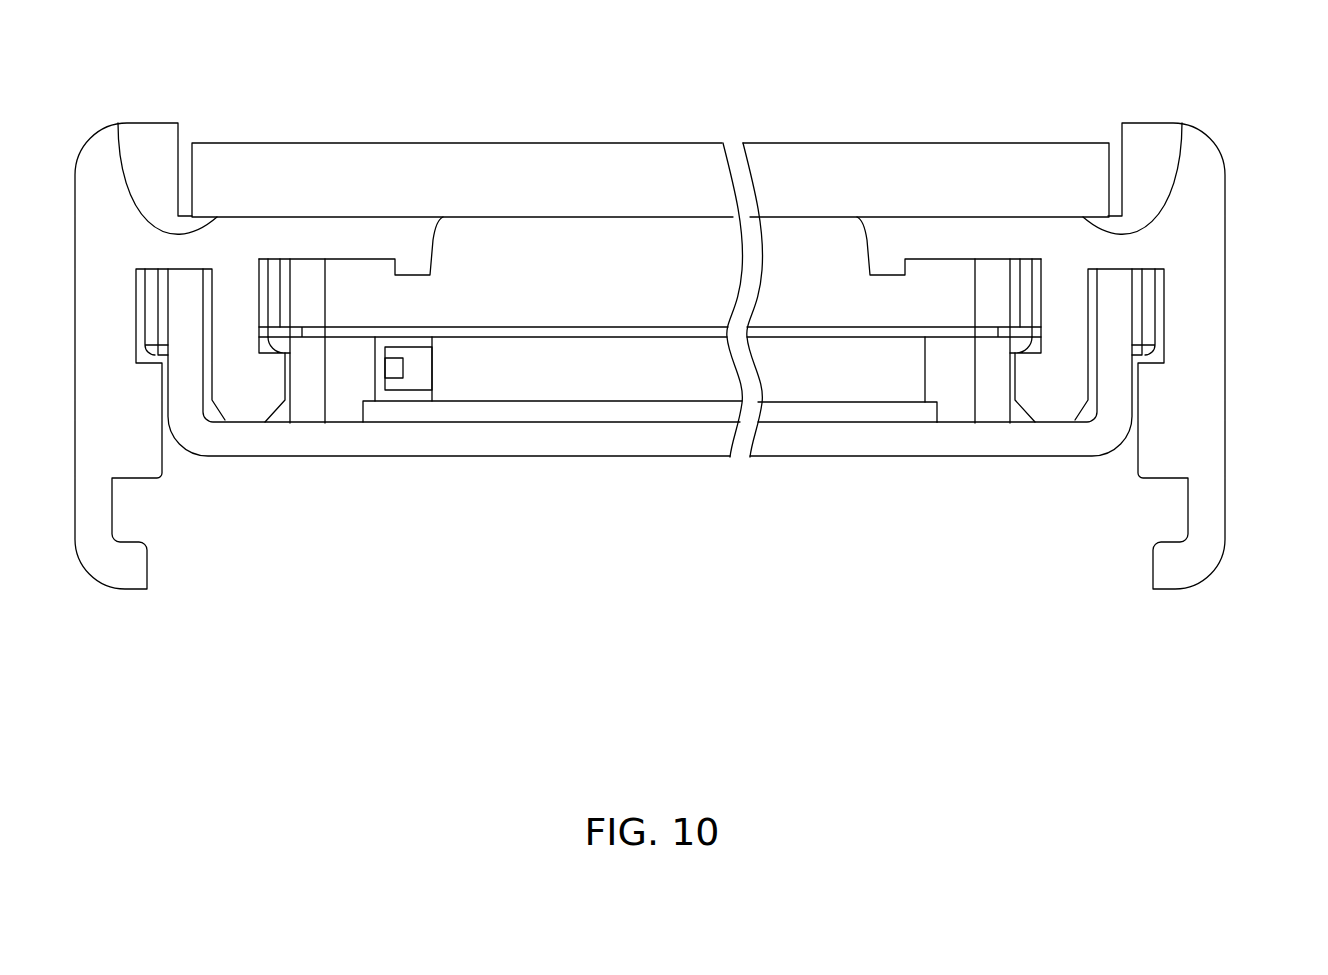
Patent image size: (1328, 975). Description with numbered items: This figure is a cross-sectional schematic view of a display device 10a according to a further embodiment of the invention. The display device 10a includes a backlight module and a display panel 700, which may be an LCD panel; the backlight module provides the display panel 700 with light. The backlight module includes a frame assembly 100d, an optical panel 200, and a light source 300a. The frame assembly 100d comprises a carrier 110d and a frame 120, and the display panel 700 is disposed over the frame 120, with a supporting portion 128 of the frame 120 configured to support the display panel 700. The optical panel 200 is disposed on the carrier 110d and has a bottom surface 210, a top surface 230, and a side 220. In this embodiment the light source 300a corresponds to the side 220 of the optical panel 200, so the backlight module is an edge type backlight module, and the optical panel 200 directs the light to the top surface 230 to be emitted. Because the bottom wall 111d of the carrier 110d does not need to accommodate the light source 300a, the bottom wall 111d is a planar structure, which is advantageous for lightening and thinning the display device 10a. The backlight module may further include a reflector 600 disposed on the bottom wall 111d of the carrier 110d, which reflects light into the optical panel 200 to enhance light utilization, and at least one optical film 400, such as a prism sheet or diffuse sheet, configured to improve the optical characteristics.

The display device 10a is at (1262, 94).
The frame assembly 100d is at (650, 441).
The carrier 110d is at (650, 479).
The bottom wall 111d is at (992, 440).
The frame 120 is at (130, 573).
The supporting portion 128 is at (118, 123).
The optical panel 200 is at (820, 375).
The bottom surface 210 is at (890, 400).
The side 220 is at (433, 368).
The top surface 230 is at (695, 337).
The light source 300a is at (395, 373).
The optical film 400 is at (792, 333).
The reflector 600 is at (540, 405).
The display panel 700 is at (487, 200).